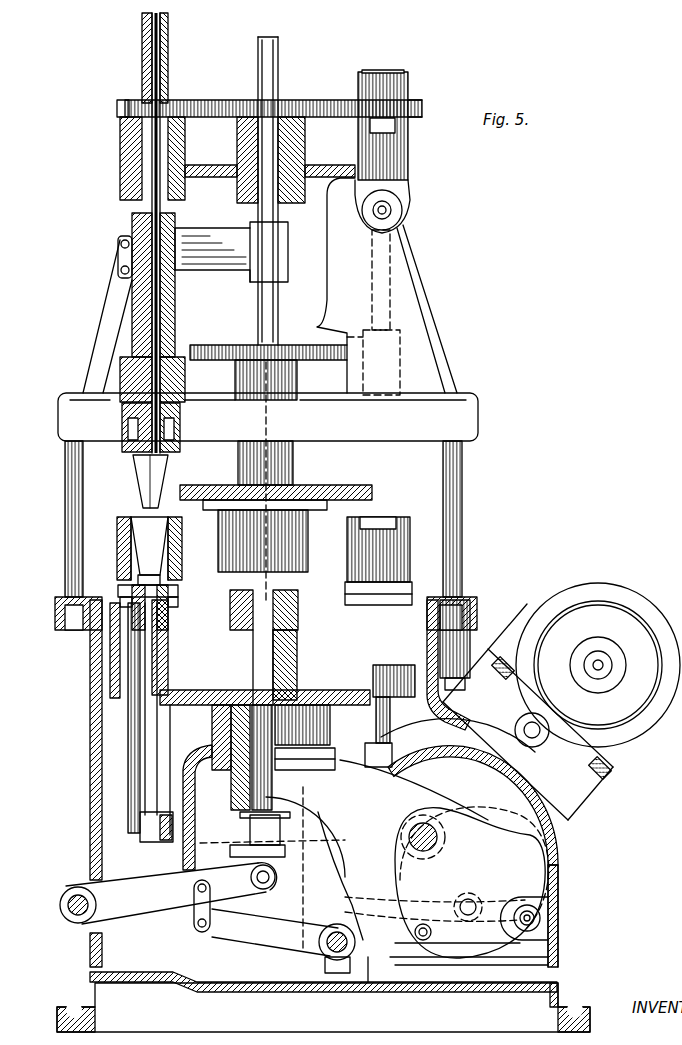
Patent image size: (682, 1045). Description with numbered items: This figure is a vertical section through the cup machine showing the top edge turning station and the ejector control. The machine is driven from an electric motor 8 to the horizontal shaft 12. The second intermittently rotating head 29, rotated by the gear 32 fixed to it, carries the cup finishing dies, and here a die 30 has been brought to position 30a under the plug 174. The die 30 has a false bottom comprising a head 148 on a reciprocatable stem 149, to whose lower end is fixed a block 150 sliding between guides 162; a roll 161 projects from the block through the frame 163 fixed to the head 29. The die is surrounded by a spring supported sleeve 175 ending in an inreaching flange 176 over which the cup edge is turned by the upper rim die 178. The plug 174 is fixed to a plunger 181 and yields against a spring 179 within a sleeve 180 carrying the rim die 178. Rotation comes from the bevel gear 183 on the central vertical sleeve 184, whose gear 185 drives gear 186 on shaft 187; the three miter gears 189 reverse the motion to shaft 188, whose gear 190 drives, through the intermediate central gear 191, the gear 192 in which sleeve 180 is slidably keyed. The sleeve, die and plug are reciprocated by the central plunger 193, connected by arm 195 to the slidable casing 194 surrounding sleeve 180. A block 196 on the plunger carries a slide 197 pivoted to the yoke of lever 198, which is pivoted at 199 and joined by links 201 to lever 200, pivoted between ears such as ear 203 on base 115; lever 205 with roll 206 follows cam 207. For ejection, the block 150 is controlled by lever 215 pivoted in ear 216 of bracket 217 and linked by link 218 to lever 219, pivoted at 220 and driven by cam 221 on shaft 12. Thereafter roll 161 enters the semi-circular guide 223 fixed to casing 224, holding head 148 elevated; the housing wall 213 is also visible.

The electric motor 8 is at (652, 625).
The horizontal shaft 12 is at (469, 883).
The second intermittently rotating head 29 is at (297, 652).
The cup finishing die 30 is at (356, 545).
The die position under plug 30a is at (182, 565).
The gear 32 is at (403, 672).
The base 115 is at (560, 993).
The head 148 is at (372, 517).
The reciprocatable stem 149 is at (128, 740).
The block 150 is at (388, 748).
The roll 161 is at (365, 772).
The guides 162 is at (346, 876).
The frame 163 is at (170, 843).
The plug 174 is at (142, 480).
The sleeve 175 is at (120, 553).
The inreaching flange 176 is at (128, 516).
The upper rim die 178 is at (130, 448).
The spring 179 is at (183, 385).
The sleeve 180 is at (140, 205).
The plunger 181 is at (128, 286).
The bevel gear 183 is at (250, 828).
The central vertical sleeve 184 is at (245, 655).
The gear 185 is at (244, 345).
The gear 186 is at (437, 335).
The shaft 187 is at (390, 285).
The shaft 188 is at (392, 73).
The miter gears 189 is at (403, 218).
The gear 190 is at (416, 110).
The intermediate central gear 191 is at (292, 107).
The gear 192 is at (117, 105).
The central plunger 193 is at (276, 318).
The slidable casing 194 is at (175, 317).
The arm 195 is at (215, 272).
The block 196 is at (310, 830).
The slide 197 is at (264, 889).
The lever 198 is at (171, 893).
The pivot 199 is at (66, 918).
The lever 200 is at (275, 932).
The links 201 is at (195, 905).
The ear 203 is at (338, 983).
The lever 205 is at (365, 975).
The roll 206 is at (480, 900).
The cam 207 is at (535, 852).
The housing 213 is at (92, 768).
The lever 215 is at (465, 735).
The ear 216 is at (478, 838).
The bracket 217 is at (503, 968).
The link 218 is at (435, 904).
The lever 219 is at (305, 952).
The pivot 220 is at (541, 918).
The cam 221 is at (545, 775).
The semi-circular guide 223 is at (322, 705).
The casing 224 is at (162, 983).